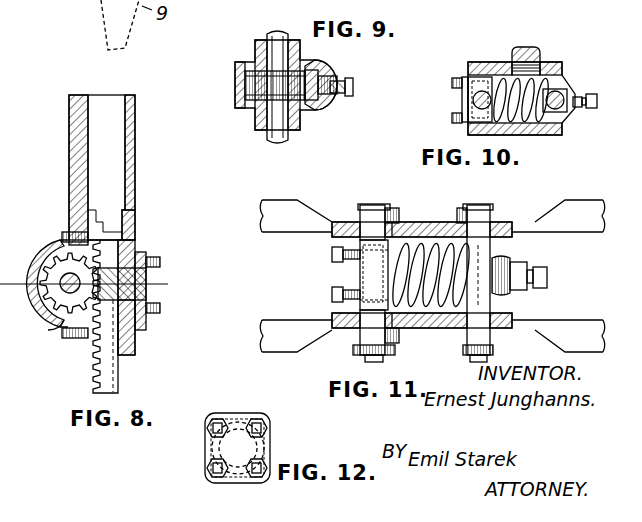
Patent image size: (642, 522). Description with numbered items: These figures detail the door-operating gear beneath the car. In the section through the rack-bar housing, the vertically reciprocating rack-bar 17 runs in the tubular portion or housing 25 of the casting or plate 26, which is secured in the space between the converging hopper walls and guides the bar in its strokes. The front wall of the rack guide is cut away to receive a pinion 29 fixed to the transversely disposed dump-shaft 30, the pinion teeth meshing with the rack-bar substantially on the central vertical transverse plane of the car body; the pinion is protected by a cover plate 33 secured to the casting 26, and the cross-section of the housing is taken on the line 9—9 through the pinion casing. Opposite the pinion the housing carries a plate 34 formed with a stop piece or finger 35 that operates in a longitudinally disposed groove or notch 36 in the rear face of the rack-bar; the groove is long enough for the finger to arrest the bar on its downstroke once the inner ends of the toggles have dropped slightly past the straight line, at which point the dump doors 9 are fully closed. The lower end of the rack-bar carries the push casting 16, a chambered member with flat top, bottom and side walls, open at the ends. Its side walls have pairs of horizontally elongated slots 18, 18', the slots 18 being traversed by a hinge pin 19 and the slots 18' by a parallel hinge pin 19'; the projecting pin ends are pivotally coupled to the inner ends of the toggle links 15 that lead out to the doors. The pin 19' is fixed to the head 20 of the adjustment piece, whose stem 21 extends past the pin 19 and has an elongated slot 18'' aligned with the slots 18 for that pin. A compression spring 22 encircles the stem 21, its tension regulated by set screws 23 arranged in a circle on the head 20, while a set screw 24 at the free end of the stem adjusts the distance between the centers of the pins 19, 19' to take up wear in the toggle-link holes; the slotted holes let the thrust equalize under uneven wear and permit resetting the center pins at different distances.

In FIG. 8, the dump door 9 is at (175, 268).
In FIG. 11, the toggle links 15 is at (280, 192).
In FIG. 10, the push casting 16 is at (473, 62).
In FIG. 11, the push casting 16 is at (401, 222).
In FIG. 8, the rack-bar 17 is at (112, 372).
In FIG. 9, the rack-bar 17 is at (314, 106).
In FIG. 10, the rack-bar 17 is at (540, 50).
In FIG. 11, the elongated slots 18 is at (422, 278).
In FIG. 11, the elongated slots 18' is at (349, 201).
In FIG. 10, the elongated slot 18'' is at (589, 82).
In FIG. 11, the elongated slot 18'' is at (522, 262).
In FIG. 10, the hinge pin 19 is at (574, 69).
In FIG. 11, the hinge pin 19 is at (483, 268).
In FIG. 10, the hinge pin 19' is at (446, 109).
In FIG. 11, the hinge pin 19' is at (376, 264).
In FIG. 10, the head of the adjustment piece 20 is at (468, 92).
In FIG. 11, the head of the adjustment piece 20 is at (374, 278).
In FIG. 12, the head of the adjustment piece 20 is at (238, 424).
In FIG. 10, the stem of the adjustment piece 21 is at (530, 120).
In FIG. 11, the stem of the adjustment piece 21 is at (431, 247).
In FIG. 12, the stem of the adjustment piece 21 is at (270, 445).
In FIG. 10, the compression spring 22 is at (501, 62).
In FIG. 11, the compression spring 22 is at (424, 318).
In FIG. 12, the compression spring 22 is at (205, 450).
In FIG. 10, the set screws 23 is at (452, 82).
In FIG. 11, the set screws 23 is at (330, 254).
In FIG. 12, the set screws 23 is at (218, 419).
In FIG. 10, the set screw 24 is at (589, 100).
In FIG. 11, the set screw 24 is at (547, 272).
In FIG. 8, the tubular portion or housing 25 is at (118, 138).
In FIG. 9, the tubular portion or housing 25 is at (312, 112).
In FIG. 8, the casting or plate 26 is at (70, 168).
In FIG. 9, the casting or plate 26 is at (256, 42).
In FIG. 8, the pinion 29 is at (42, 292).
In FIG. 8, the dump-shaft 30 is at (58, 314).
In FIG. 9, the dump-shaft 30 is at (270, 142).
In FIG. 8, the cover plate 33 is at (50, 254).
In FIG. 9, the cover plate 33 is at (243, 78).
In FIG. 8, the plate 34 is at (150, 297).
In FIG. 9, the plate 34 is at (348, 82).
In FIG. 8, the stop piece or finger 35 is at (148, 270).
In FIG. 9, the stop piece or finger 35 is at (322, 80).
In FIG. 8, the groove or notch 36 is at (122, 326).